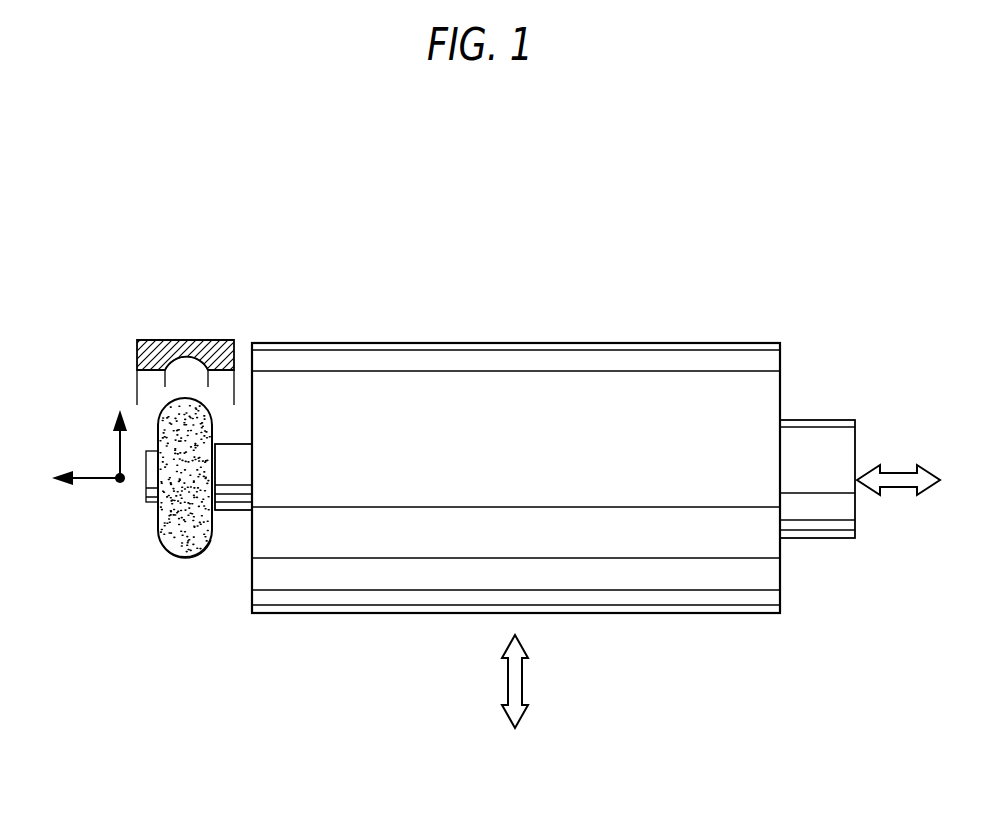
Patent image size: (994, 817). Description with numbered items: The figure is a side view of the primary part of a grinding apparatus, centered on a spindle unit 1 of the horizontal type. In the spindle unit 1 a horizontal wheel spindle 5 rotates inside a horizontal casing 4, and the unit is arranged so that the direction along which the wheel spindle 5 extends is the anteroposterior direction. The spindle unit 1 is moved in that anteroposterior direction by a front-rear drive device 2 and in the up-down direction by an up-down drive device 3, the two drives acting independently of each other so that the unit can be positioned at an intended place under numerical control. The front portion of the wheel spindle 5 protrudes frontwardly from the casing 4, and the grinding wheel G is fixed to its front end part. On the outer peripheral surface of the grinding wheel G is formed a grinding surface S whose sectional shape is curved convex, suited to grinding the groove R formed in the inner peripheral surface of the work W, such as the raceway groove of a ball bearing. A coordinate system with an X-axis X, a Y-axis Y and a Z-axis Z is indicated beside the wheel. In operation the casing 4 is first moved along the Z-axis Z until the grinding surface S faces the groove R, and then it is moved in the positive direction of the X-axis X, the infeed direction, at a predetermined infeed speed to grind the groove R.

The spindle unit 1 is at (688, 296).
The front-rear drive device 2 is at (895, 488).
The up-down drive device 3 is at (522, 683).
The casing 4 is at (487, 360).
The wheel spindle 5 is at (235, 503).
The grinding wheel G is at (170, 522).
The grinding surface S is at (185, 558).
The groove R is at (177, 362).
The work W is at (202, 347).
The X-axis X is at (118, 428).
The Y-axis Y is at (115, 485).
The Z-axis Z is at (75, 477).